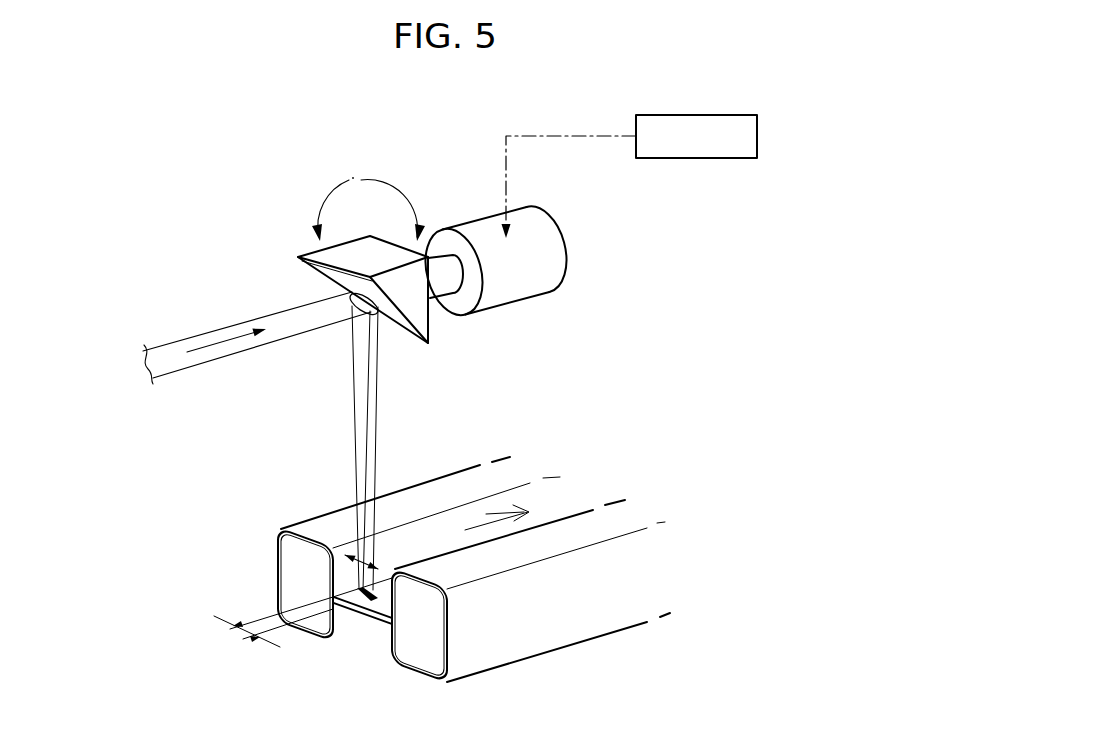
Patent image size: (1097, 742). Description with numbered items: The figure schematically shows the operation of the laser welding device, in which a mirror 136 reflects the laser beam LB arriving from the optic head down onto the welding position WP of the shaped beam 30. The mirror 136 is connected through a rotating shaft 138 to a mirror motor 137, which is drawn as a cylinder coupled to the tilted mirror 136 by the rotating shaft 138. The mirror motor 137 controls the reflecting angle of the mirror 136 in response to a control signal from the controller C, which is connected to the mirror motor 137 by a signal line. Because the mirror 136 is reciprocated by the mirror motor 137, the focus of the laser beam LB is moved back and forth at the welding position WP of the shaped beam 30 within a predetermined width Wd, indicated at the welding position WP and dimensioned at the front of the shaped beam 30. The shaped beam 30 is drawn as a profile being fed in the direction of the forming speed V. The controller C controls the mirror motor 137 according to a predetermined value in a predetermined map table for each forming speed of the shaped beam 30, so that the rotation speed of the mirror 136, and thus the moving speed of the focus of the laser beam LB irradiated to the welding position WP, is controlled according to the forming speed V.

The mirror 136 is at (387, 257).
The mirror motor 137 is at (517, 288).
The rotating shaft 138 is at (443, 283).
The shaped beam 30 is at (510, 643).
The laser beam LB is at (370, 439).
The welding position WP is at (381, 585).
The predetermined width wd is at (208, 659).
The forming speed V is at (514, 508).
The controller c is at (697, 158).